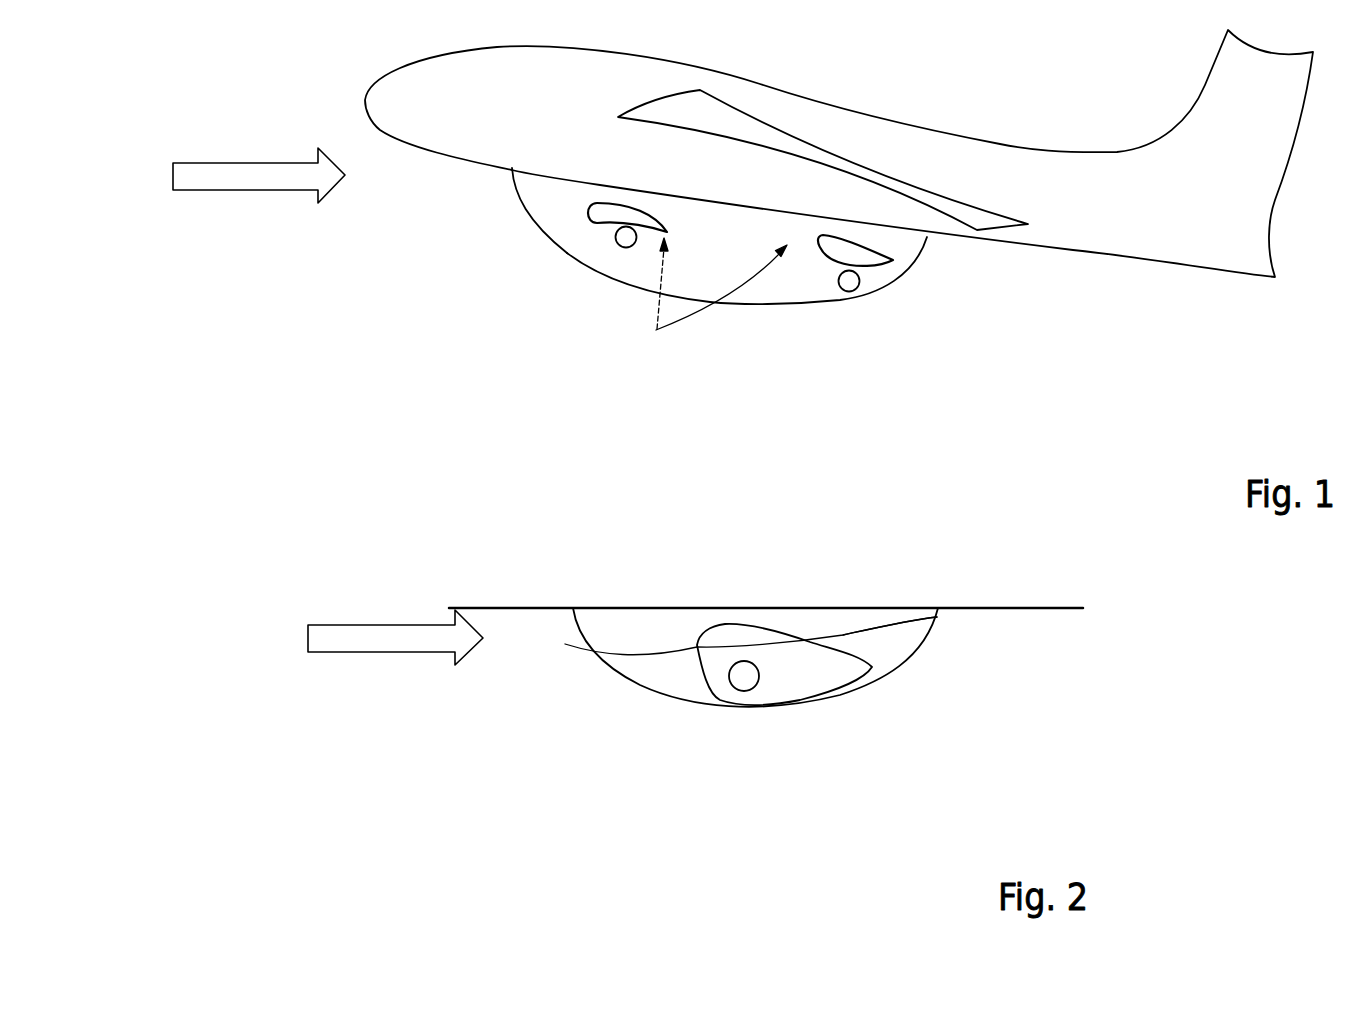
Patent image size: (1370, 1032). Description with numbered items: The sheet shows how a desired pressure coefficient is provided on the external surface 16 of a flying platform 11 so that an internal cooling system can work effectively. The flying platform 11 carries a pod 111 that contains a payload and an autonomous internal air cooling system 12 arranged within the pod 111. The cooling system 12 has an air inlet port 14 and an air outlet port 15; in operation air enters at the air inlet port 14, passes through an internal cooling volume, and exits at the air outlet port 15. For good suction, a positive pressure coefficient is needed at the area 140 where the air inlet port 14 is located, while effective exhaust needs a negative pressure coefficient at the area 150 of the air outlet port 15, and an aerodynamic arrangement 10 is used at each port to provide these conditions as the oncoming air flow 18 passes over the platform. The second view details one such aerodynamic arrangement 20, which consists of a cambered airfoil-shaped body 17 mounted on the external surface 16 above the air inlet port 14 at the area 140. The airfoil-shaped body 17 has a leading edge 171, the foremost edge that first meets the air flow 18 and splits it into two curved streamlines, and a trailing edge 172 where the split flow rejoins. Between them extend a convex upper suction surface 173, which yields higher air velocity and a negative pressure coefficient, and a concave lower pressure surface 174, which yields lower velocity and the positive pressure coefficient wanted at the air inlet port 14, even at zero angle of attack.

In FIG. 1, the aerodynamic arrangement 10 is at (696, 297).
In FIG. 1, the flying platform 11 is at (998, 143).
In FIG. 2, the flying platform 11 is at (623, 680).
In FIG. 1, the pod 111 is at (518, 207).
In FIG. 1, the internal air cooling system 12 is at (657, 329).
In FIG. 1, the air inlet port 14 is at (620, 247).
In FIG. 2, the air inlet port 14 is at (745, 676).
In FIG. 1, the area of the air inlet port 140 is at (598, 239).
In FIG. 2, the area of the air inlet port 140 is at (803, 675).
In FIG. 1, the air outlet port 15 is at (848, 292).
In FIG. 1, the area of the air outlet port 150 is at (870, 278).
In FIG. 1, the external surface 16 is at (780, 288).
In FIG. 2, the external surface 16 is at (648, 628).
In FIG. 2, the airfoil-shaped body 17 is at (757, 636).
In FIG. 2, the leading edge 171 is at (565, 644).
In FIG. 2, the trailing edge 172 is at (937, 617).
In FIG. 2, the suction surface 173 is at (742, 622).
In FIG. 2, the pressure surface 174 is at (767, 645).
In FIG. 1, the oncoming air flow 18 is at (245, 191).
In FIG. 2, the oncoming air flow 18 is at (400, 654).
In FIG. 2, the aerodynamic arrangement 20 is at (728, 692).